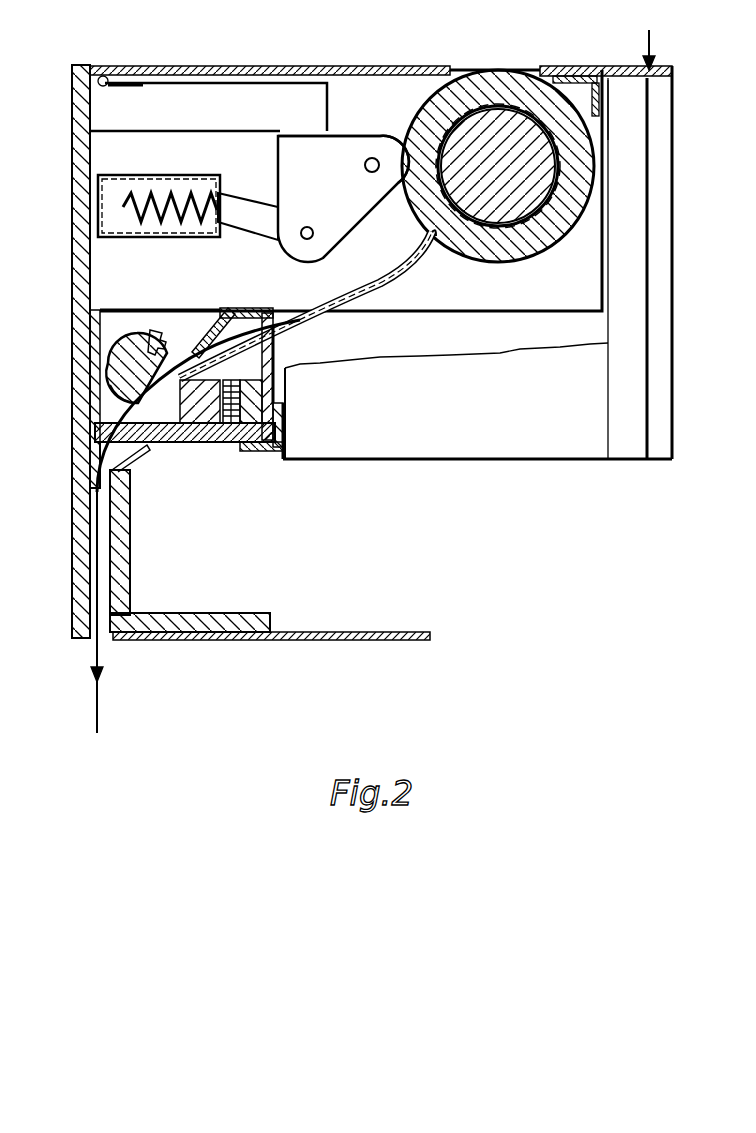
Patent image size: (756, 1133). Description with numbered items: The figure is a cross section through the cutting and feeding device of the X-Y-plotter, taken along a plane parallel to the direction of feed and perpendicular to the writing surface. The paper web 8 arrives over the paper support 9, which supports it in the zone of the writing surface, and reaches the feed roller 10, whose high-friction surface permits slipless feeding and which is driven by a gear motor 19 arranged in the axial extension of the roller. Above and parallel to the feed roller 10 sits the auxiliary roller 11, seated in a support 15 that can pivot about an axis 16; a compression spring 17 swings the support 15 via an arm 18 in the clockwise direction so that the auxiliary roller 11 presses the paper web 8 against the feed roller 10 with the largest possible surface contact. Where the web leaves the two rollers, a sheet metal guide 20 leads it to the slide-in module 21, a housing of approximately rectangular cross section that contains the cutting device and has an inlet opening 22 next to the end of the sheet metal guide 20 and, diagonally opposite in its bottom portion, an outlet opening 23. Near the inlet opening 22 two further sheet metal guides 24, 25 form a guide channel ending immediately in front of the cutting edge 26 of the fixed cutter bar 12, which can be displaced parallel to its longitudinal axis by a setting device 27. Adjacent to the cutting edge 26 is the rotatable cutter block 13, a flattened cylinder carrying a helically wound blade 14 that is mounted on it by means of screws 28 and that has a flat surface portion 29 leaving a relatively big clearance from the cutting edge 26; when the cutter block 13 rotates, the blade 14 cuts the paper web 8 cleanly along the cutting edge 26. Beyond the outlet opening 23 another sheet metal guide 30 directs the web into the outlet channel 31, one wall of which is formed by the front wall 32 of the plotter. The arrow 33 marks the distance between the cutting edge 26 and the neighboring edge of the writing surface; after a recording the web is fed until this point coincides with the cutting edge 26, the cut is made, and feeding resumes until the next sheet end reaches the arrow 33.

The paper web 8 is at (413, 243).
The paper support 9 is at (625, 80).
The feed roller 10 is at (467, 90).
The auxiliary roller 11 is at (378, 136).
The cutter bar 12 is at (210, 443).
The cutter block 13 is at (108, 357).
The blade 14 is at (150, 327).
The support 15 is at (343, 200).
The axis 16 is at (313, 240).
The compression spring 17 is at (197, 200).
The arm 18 is at (240, 208).
The gear motor 19 is at (503, 137).
The sheet metal guide 20 is at (398, 287).
The slide-in module 21 is at (167, 443).
The inlet opening 22 is at (273, 310).
The outlet opening 23 is at (112, 434).
The sheet metal guide 24 is at (207, 327).
The sheet metal guide 25 is at (275, 338).
The cutting edge 26 is at (187, 433).
The setting device 27 is at (245, 453).
The ratchet 28 is at (160, 340).
The flat surface portion 29 is at (123, 388).
The sheet metal guide 30 is at (140, 460).
The outlet channel 31 is at (100, 590).
The front wall 32 is at (85, 520).
The arrow 33 is at (646, 45).